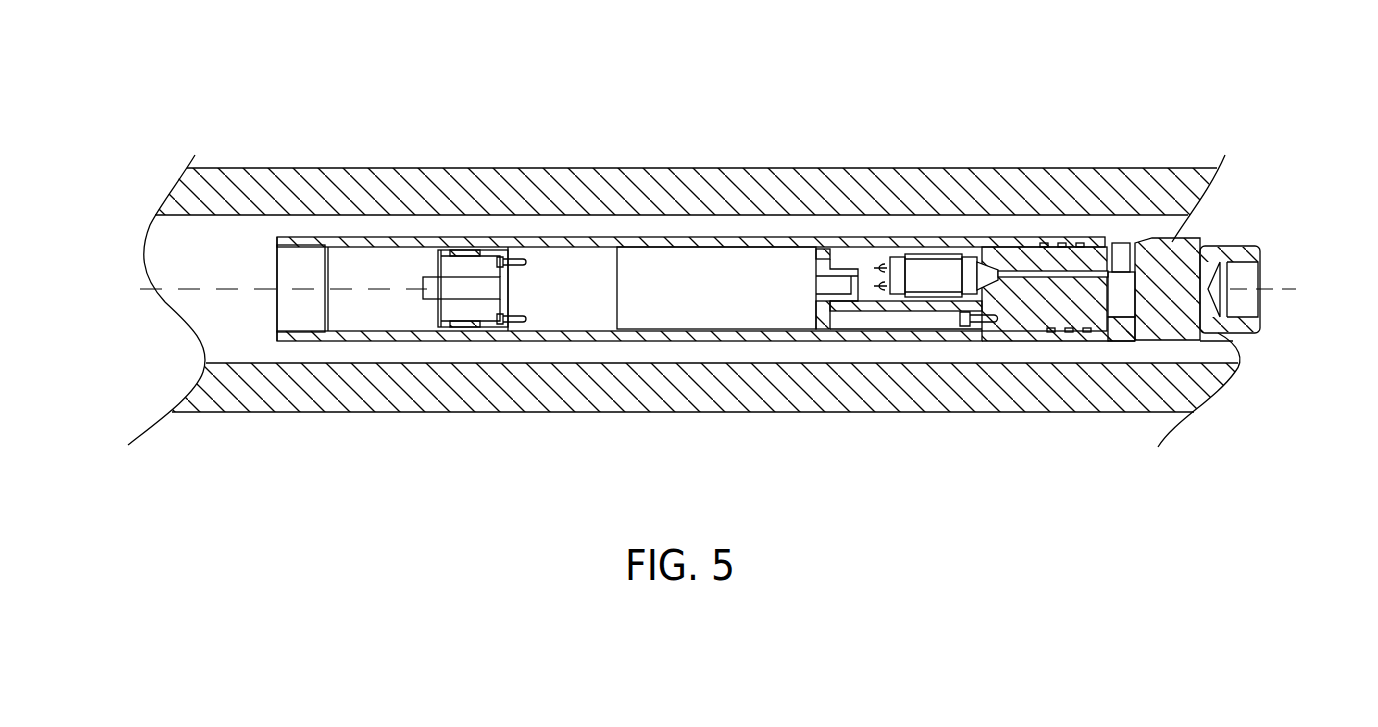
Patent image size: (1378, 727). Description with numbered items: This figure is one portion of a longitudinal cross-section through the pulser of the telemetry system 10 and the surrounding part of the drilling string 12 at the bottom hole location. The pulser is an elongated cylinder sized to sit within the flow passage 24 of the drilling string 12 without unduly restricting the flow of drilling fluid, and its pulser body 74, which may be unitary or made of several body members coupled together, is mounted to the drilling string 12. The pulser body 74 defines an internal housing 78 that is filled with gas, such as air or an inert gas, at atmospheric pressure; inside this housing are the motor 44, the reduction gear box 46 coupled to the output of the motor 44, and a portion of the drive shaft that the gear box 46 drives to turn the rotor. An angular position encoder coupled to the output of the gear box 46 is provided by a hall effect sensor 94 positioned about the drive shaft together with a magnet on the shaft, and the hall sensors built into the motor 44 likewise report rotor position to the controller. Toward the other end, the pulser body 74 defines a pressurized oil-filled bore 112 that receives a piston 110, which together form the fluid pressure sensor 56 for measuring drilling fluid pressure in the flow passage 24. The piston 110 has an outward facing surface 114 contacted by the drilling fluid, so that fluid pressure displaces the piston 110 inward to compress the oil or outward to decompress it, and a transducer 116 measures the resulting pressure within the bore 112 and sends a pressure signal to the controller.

The telemetry system 10 is at (820, 129).
The drilling string 12 is at (412, 177).
The flow passage 24 is at (262, 223).
The motor 44 is at (716, 262).
The reduction gear box 46 is at (540, 266).
The fluid pressure sensor 56 is at (1040, 307).
The pulser body 74 is at (803, 341).
The internal housing 78 is at (630, 334).
The hall effect sensor 94 is at (462, 333).
The piston 110 is at (1113, 318).
The bore 112 is at (1123, 243).
The outward facing surface 114 is at (1117, 343).
The transducer 116 is at (940, 272).